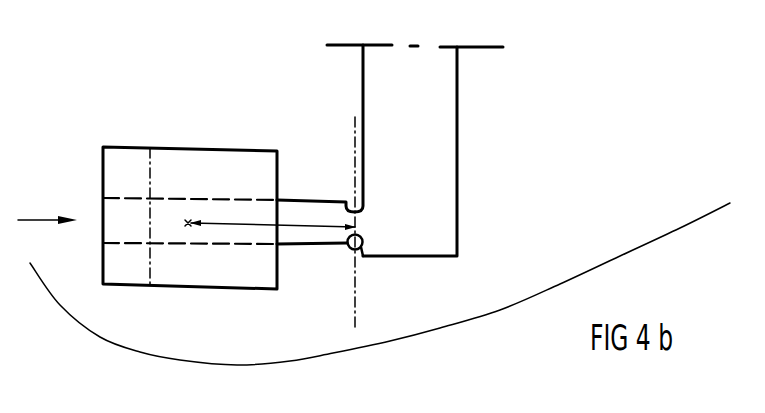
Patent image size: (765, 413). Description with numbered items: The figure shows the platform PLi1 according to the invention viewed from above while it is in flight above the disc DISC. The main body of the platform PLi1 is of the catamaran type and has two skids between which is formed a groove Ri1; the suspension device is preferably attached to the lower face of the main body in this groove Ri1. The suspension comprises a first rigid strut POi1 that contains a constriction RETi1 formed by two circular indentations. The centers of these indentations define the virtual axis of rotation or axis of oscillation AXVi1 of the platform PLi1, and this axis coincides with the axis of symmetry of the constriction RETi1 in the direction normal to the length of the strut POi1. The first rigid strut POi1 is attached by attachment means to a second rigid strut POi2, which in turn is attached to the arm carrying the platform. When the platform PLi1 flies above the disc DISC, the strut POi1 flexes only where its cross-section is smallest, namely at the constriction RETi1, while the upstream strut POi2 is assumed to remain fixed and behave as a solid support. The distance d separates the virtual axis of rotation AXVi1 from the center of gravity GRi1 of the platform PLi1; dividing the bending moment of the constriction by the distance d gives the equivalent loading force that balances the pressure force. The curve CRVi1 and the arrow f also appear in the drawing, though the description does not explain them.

The platform PLi1 is at (160, 147).
The first rigid strut POi1 is at (288, 201).
The second rigid strut POi2 is at (457, 148).
The virtual axis of rotation AXVi1 is at (358, 138).
The constriction RETi1 is at (357, 231).
The curve / circle CRV i1 CRVi1 is at (358, 249).
The center of gravity GRi1 is at (164, 226).
The groove Ri1 is at (105, 241).
The disc DISC is at (472, 270).
The distance d is at (273, 215).
The direction of movement f is at (47, 207).